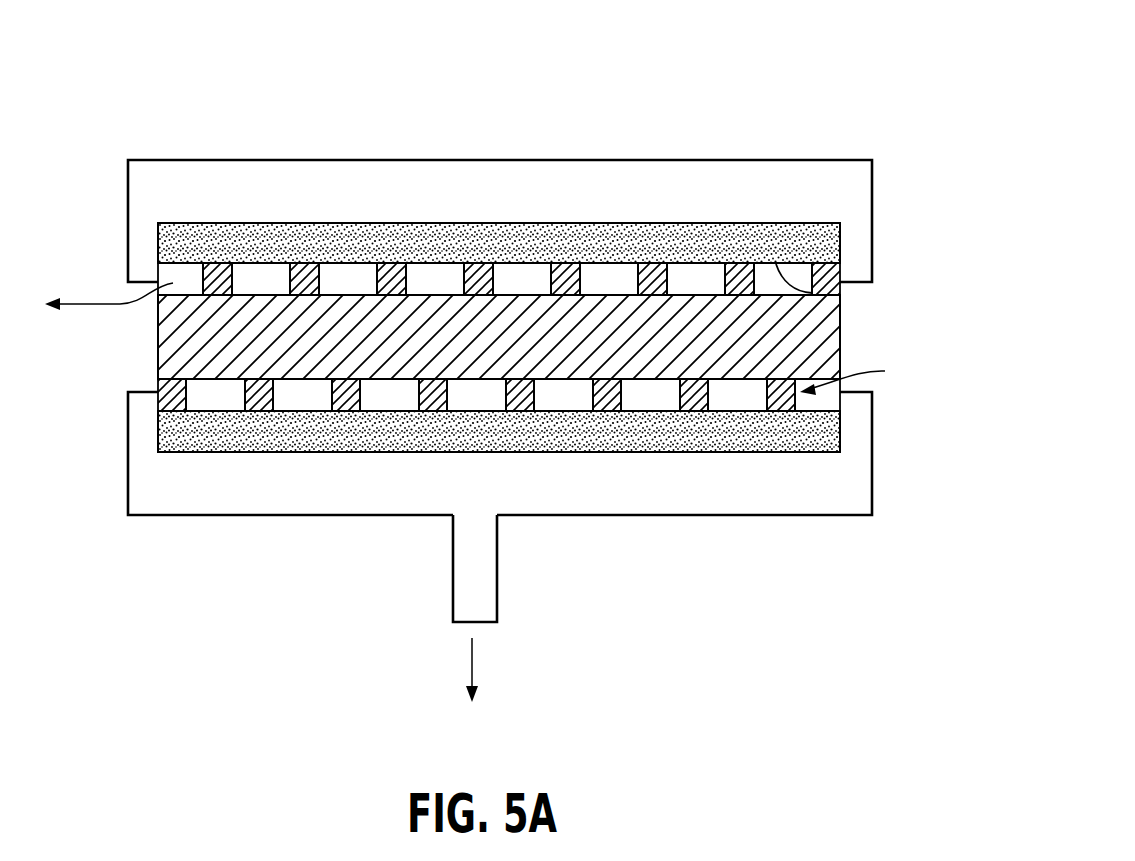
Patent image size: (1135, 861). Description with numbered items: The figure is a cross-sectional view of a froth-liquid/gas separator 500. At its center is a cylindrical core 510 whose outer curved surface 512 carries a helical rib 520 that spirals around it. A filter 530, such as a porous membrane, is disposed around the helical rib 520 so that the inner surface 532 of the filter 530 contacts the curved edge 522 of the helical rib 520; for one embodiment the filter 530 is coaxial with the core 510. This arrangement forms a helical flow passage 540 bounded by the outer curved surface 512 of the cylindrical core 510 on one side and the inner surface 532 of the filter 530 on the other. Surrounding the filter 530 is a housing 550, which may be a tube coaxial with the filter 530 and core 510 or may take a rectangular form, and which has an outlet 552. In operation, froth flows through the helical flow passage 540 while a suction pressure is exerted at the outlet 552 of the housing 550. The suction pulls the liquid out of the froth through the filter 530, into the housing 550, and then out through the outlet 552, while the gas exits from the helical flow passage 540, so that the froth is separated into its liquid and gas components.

The froth-liquid/gas separator 500 is at (768, 66).
The cylindrical core 510 is at (842, 342).
The outer curved surface 512 is at (514, 293).
The helical rib 520 is at (160, 390).
The curved edge 522 is at (221, 283).
The filter 530 is at (830, 239).
The inner surface 532 is at (827, 295).
The helical flow passage 540 is at (361, 283).
The housing 550 is at (610, 158).
The outlet 552 is at (497, 583).